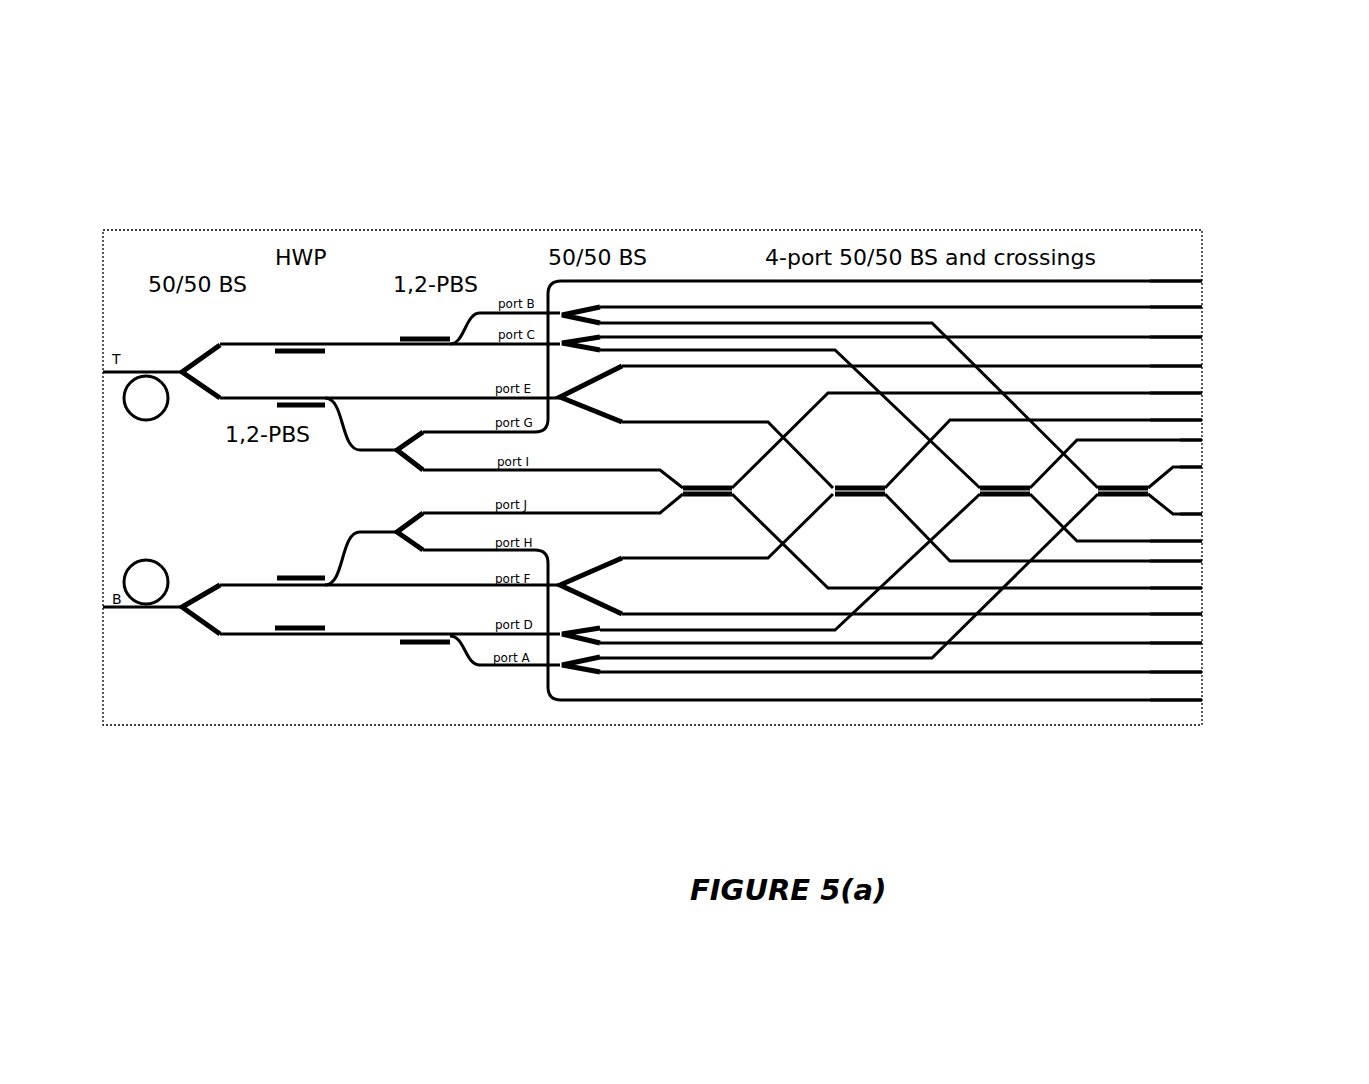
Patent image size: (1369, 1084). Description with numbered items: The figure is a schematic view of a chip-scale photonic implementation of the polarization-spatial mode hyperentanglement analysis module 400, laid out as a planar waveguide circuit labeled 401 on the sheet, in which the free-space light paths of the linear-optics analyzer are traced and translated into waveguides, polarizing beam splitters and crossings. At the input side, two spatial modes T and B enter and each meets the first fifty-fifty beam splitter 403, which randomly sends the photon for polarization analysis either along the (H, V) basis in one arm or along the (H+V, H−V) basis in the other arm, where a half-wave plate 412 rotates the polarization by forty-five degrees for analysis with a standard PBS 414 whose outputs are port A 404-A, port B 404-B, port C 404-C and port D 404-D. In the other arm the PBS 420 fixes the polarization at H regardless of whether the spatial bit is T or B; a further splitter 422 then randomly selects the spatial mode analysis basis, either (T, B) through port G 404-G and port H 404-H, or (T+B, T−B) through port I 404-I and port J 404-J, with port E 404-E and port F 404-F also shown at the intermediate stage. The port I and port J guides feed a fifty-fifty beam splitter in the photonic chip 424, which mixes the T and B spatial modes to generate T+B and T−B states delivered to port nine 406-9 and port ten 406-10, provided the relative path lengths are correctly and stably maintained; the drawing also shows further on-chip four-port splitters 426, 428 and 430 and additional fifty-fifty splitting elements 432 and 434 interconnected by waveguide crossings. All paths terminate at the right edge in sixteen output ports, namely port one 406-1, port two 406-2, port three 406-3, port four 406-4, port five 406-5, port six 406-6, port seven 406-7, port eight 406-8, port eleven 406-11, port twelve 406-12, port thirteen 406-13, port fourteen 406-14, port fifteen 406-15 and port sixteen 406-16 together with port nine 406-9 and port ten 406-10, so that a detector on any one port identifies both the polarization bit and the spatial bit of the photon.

The analyzer module 400 is at (652, 429).
The input waveguides 401 is at (98, 607).
The first 50/50 beam splitter 403 is at (197, 392).
The half-wave plate 412 is at (295, 576).
The standard PBS 414 is at (445, 341).
The PBS 420 is at (580, 415).
The 50/50 BS 422 is at (397, 528).
The 50/50 BS in a photonic chip 424 is at (705, 498).
The 4-port 50/50 beam splitter 426 is at (1015, 453).
The 4-port 50/50 beam splitter 428 is at (1113, 490).
The 4-port 50/50 beam splitter 430 is at (873, 480).
The 50/50 beam splitter 432 is at (610, 327).
The 50/50 beam splitter 434 is at (566, 305).
The port A 404-A is at (505, 669).
The port B 404-B is at (495, 320).
The port C 404-C is at (390, 354).
The port D 404-D is at (390, 617).
The waveguide port E 404-E is at (390, 389).
The waveguide port F 404-F is at (390, 577).
The port G 404-G is at (812, 356).
The port H 404-H is at (812, 612).
The port I 404-I is at (553, 469).
The port J 404-J is at (553, 501).
The port 1 406-1 is at (1250, 465).
The port 2 406-2 is at (1244, 510).
The port 3 406-3 is at (1235, 671).
The port 4 406-4 is at (1235, 302).
The port 5 406-5 is at (1235, 645).
The port 6 406-6 is at (1235, 331).
The port 7 406-7 is at (1256, 440).
The port 8 406-8 is at (1235, 540).
The port 9 406-9 is at (1235, 395).
The port 10 406-10 is at (1235, 586).
The port 11 406-11 is at (1240, 702).
The port 12 406-12 is at (1234, 275).
The port 13 406-13 is at (1240, 615).
The port 14 406-14 is at (1240, 365).
The port 15 406-15 is at (1235, 562).
The port 16 406-16 is at (1240, 420).